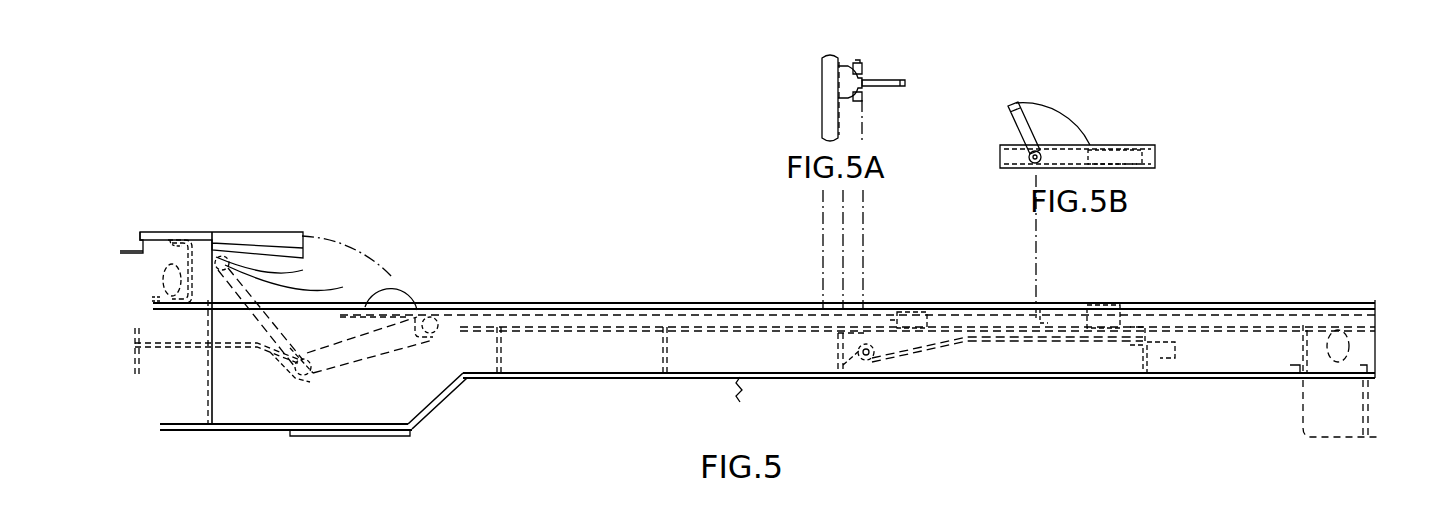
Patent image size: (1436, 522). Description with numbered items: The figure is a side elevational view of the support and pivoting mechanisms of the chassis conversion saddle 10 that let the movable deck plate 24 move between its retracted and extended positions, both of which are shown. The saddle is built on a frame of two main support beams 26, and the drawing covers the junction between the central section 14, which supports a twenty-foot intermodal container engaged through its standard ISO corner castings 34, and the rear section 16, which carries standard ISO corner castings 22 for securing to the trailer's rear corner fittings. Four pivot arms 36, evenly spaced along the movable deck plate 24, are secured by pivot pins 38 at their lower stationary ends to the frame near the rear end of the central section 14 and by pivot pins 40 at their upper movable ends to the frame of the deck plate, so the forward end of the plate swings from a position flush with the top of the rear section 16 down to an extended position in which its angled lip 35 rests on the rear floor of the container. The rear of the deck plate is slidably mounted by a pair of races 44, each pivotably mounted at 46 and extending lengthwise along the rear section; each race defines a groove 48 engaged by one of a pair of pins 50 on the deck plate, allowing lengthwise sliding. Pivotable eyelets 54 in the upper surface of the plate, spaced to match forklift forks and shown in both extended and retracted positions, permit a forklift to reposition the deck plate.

In FIG. 5, the chassis conversion saddle 10 is at (521, 212).
In FIG. 5, the central section 14 is at (244, 214).
In FIG. 5, the rear section 16 is at (690, 248).
In FIG. 5, the standard ISO corner castings 22 is at (1360, 344).
In FIG. 5, the movable deck plate 24 is at (583, 302).
In FIG. 5, the main support beams 26 is at (265, 432).
In FIG. 5, the standard ISO corner castings 34 is at (178, 238).
In FIG. 5, the angled lip 35 is at (200, 231).
In FIG. 5, the pivot arms 36 is at (320, 350).
In FIG. 5, the pivot pins 38 is at (310, 372).
In FIG. 5, the pivot pins 40 is at (305, 270).
In FIG. 5, the races 44 is at (945, 348).
In FIG. 5A, the races 44 is at (906, 81).
In FIG. 5, the race pivot mount 46 is at (866, 366).
In FIG. 5A, the race pivot mount 46 is at (862, 66).
In FIG. 5, the groove 48 is at (913, 315).
In FIG. 5, the pins 50 is at (1143, 325).
In FIG. 5, the pivotable eyelets 54 is at (1041, 302).
In FIG. 5B, the pivotable eyelets 54 is at (1090, 111).